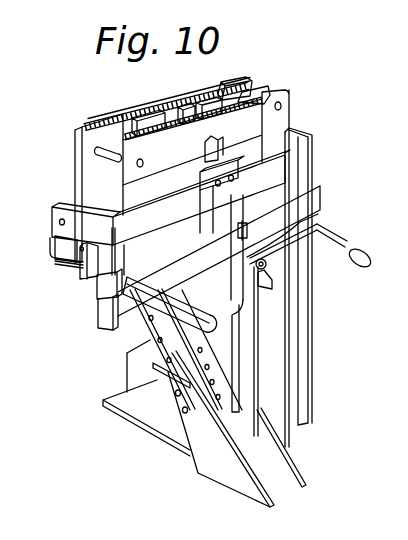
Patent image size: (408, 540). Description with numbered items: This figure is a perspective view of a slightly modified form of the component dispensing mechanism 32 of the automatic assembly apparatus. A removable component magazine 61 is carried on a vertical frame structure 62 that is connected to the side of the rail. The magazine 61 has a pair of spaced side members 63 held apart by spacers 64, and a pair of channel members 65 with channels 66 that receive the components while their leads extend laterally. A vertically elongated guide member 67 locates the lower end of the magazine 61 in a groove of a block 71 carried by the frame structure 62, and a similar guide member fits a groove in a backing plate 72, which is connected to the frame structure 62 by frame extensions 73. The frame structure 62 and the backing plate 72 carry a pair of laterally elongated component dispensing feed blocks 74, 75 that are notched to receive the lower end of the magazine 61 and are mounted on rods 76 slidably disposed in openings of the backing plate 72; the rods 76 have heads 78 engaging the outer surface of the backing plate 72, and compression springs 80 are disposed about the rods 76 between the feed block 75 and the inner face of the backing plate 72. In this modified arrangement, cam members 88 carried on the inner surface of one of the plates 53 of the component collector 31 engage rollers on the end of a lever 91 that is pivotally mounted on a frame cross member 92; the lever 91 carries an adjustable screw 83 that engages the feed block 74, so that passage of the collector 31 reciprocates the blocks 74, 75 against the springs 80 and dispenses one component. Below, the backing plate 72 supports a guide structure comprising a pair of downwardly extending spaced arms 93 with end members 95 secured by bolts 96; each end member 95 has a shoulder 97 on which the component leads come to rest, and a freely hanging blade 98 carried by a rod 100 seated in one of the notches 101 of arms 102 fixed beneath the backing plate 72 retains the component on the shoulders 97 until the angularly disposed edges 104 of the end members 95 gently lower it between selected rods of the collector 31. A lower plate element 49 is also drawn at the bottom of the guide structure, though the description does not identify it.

The component collector 31 is at (296, 402).
The component dispensing mechanism 32 is at (266, 78).
The shelf plate 49 is at (140, 428).
The vertically disposed parallel plates 53 is at (278, 335).
The component magazine 61 is at (232, 76).
The frame structure 62 is at (103, 321).
The side members 63 is at (100, 128).
The spacers 64 is at (258, 92).
The channel members 65 is at (150, 108).
The channels 66 is at (178, 103).
The vertically elongated guide member 67 is at (216, 150).
The block 71 is at (234, 200).
The backing plate 72 is at (60, 258).
The frame extensions 73 is at (86, 220).
The component dispensing feed block 74 is at (122, 313).
The component dispensing feed block 75 is at (85, 263).
The rods 76 is at (97, 264).
The heads 78 is at (50, 242).
The compression springs 80 is at (78, 264).
The adjustable screw 83 is at (247, 228).
The cam members 88 is at (280, 291).
The lever 91 is at (313, 216).
The frame cross member 92 is at (197, 257).
The arms 93 is at (140, 340).
The end members 95 is at (215, 476).
The bolts 96 is at (184, 413).
The shoulder 97 is at (237, 405).
The freely hanging blade 98 is at (252, 368).
The rod 100 is at (319, 226).
The notches 101 is at (340, 240).
The arms 102 is at (340, 249).
The angularly disposed edges 104 is at (265, 480).